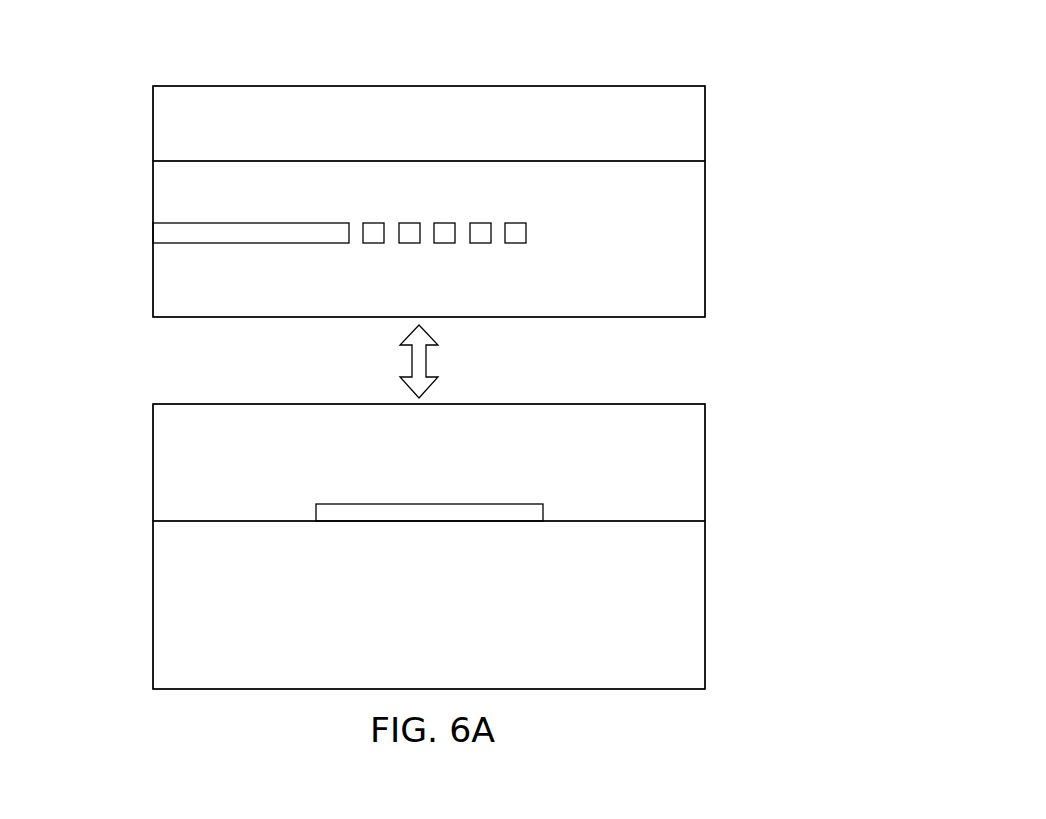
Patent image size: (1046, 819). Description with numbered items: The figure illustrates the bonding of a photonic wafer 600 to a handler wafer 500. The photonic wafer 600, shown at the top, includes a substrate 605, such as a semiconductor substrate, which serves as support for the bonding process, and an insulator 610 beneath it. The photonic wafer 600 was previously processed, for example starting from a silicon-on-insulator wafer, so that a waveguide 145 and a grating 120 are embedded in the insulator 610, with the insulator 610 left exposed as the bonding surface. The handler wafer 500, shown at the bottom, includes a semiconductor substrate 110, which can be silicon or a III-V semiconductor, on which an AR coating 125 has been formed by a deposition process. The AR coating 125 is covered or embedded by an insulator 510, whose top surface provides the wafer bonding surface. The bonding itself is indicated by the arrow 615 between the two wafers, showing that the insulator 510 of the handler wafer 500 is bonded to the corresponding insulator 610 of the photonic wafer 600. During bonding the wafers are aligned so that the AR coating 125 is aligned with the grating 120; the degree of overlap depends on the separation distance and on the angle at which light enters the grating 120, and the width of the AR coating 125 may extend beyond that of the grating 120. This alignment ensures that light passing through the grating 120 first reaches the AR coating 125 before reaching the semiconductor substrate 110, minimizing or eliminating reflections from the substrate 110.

The photonic wafer 600 is at (757, 123).
The substrate 605 is at (153, 116).
The insulator 610 is at (770, 233).
The waveguide 145 is at (200, 222).
The grating 120 is at (525, 247).
The arrow 615 is at (427, 360).
The handler wafer 500 is at (766, 450).
The insulator 510 is at (500, 403).
The AR coating 125 is at (507, 503).
The semiconductor substrate 110 is at (783, 596).